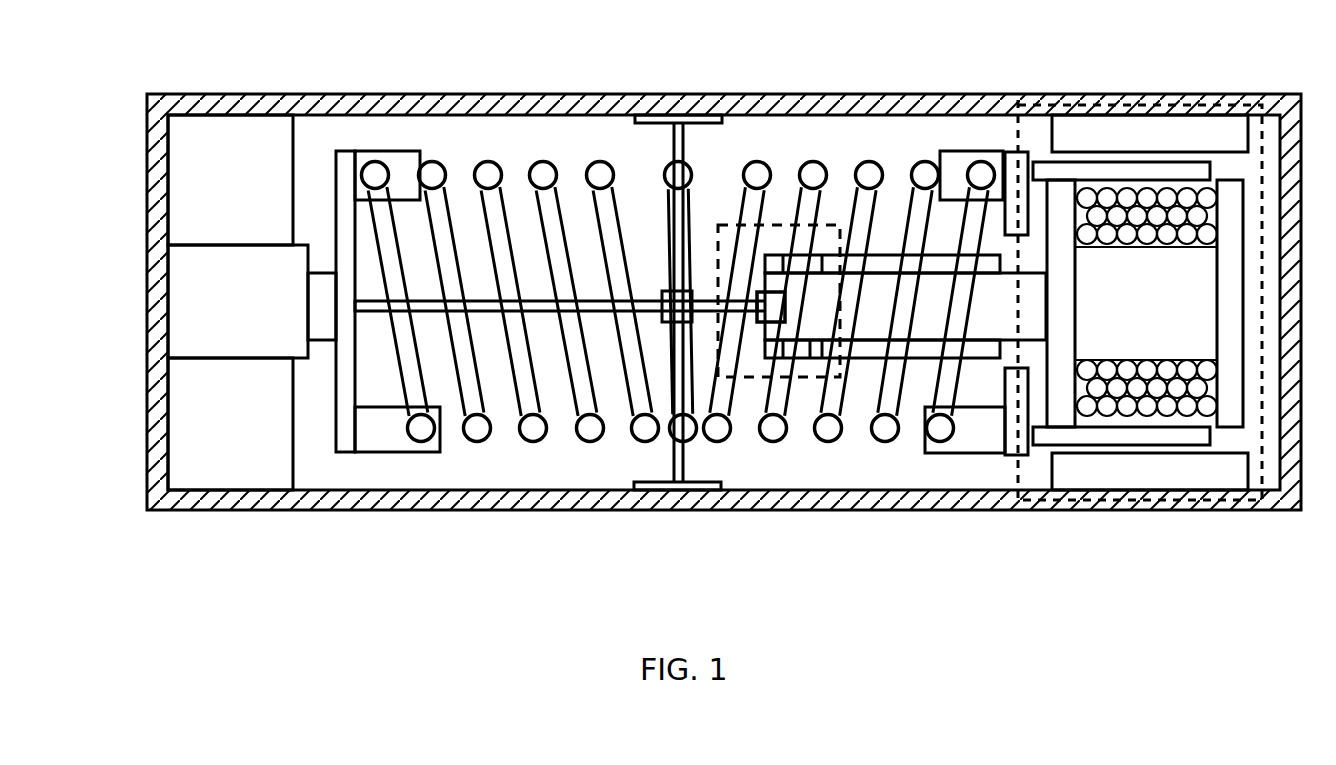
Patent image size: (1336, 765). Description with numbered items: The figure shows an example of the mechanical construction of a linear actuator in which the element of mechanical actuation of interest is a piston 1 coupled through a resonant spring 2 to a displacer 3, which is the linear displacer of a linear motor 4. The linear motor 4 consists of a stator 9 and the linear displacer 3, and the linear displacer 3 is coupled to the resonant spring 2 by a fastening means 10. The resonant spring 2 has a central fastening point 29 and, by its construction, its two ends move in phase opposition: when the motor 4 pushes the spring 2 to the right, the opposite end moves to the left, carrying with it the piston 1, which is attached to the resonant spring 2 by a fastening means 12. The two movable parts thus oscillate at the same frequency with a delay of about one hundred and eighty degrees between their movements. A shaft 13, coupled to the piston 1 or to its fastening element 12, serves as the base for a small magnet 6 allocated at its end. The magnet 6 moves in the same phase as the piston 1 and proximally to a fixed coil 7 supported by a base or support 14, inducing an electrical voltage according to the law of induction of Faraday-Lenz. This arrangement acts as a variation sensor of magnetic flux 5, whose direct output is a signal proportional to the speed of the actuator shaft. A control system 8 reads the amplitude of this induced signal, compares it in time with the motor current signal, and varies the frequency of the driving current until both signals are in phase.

The piston 1 is at (255, 317).
The resonant spring 2 is at (590, 443).
The displacer 3 is at (1113, 168).
The linear motor 4 is at (1017, 467).
The variation sensor of magnetic flux 5 is at (768, 227).
The magnet 6 is at (773, 303).
The coil 7 is at (810, 380).
The control system 8 is at (677, 145).
The stator 9 is at (1138, 330).
The fastening means 10 is at (1010, 168).
The fastening means 12 is at (353, 428).
The shaft 13 is at (493, 306).
The support 14 is at (898, 352).
The central fastening point 29 is at (672, 292).